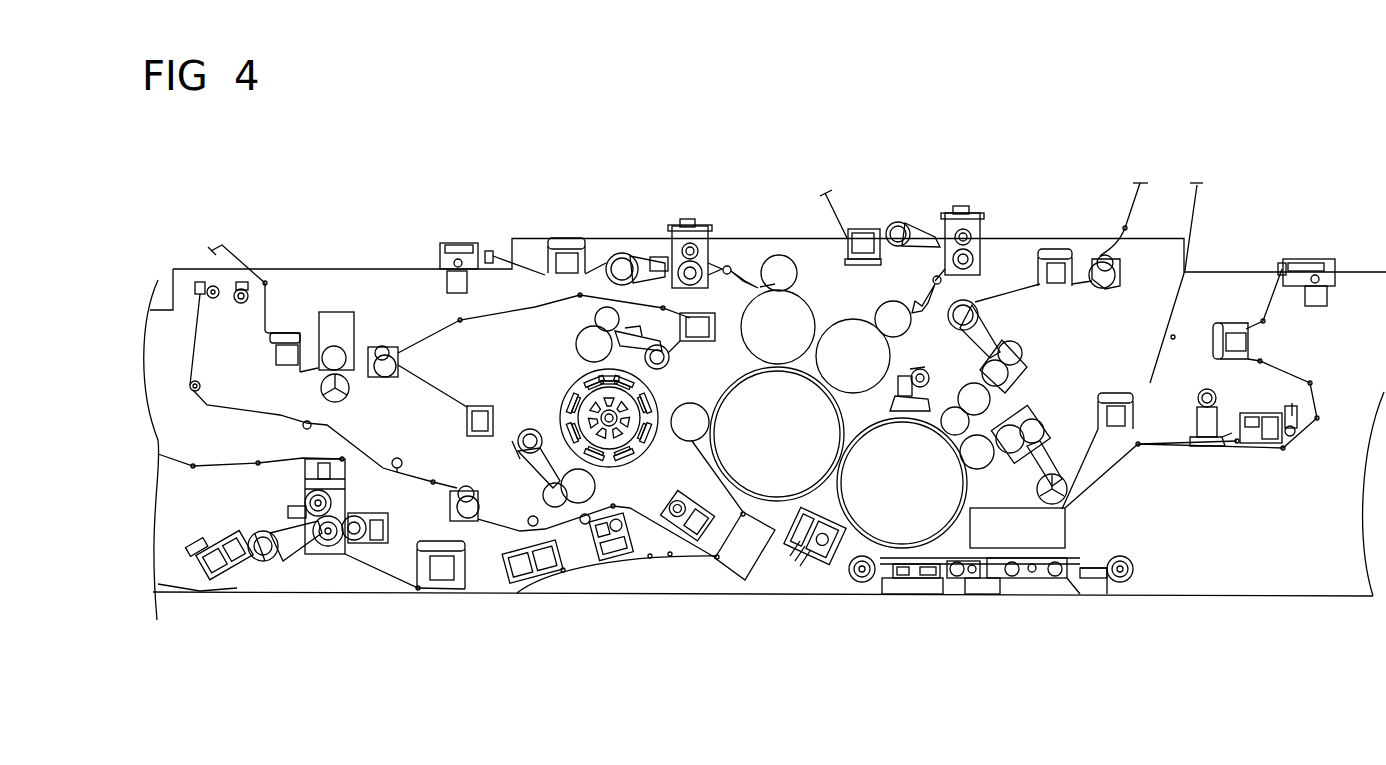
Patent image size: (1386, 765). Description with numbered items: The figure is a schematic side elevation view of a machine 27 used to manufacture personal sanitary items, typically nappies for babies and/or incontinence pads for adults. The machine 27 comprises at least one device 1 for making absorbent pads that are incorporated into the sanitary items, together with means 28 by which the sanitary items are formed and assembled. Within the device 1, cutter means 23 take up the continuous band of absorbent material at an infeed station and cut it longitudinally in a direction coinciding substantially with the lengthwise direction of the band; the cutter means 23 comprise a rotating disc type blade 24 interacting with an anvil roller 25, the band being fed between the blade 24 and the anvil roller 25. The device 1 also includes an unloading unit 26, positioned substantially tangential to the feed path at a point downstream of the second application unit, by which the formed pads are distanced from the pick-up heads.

The device 1 is at (639, 488).
The cutter means 23 is at (335, 332).
The rotating disc type blade 24 is at (340, 400).
The anvil roller 25 is at (338, 357).
The unloading unit 26 is at (690, 436).
The machine 27 is at (752, 178).
The means for forming and assembling sanitary items 28 is at (946, 348).